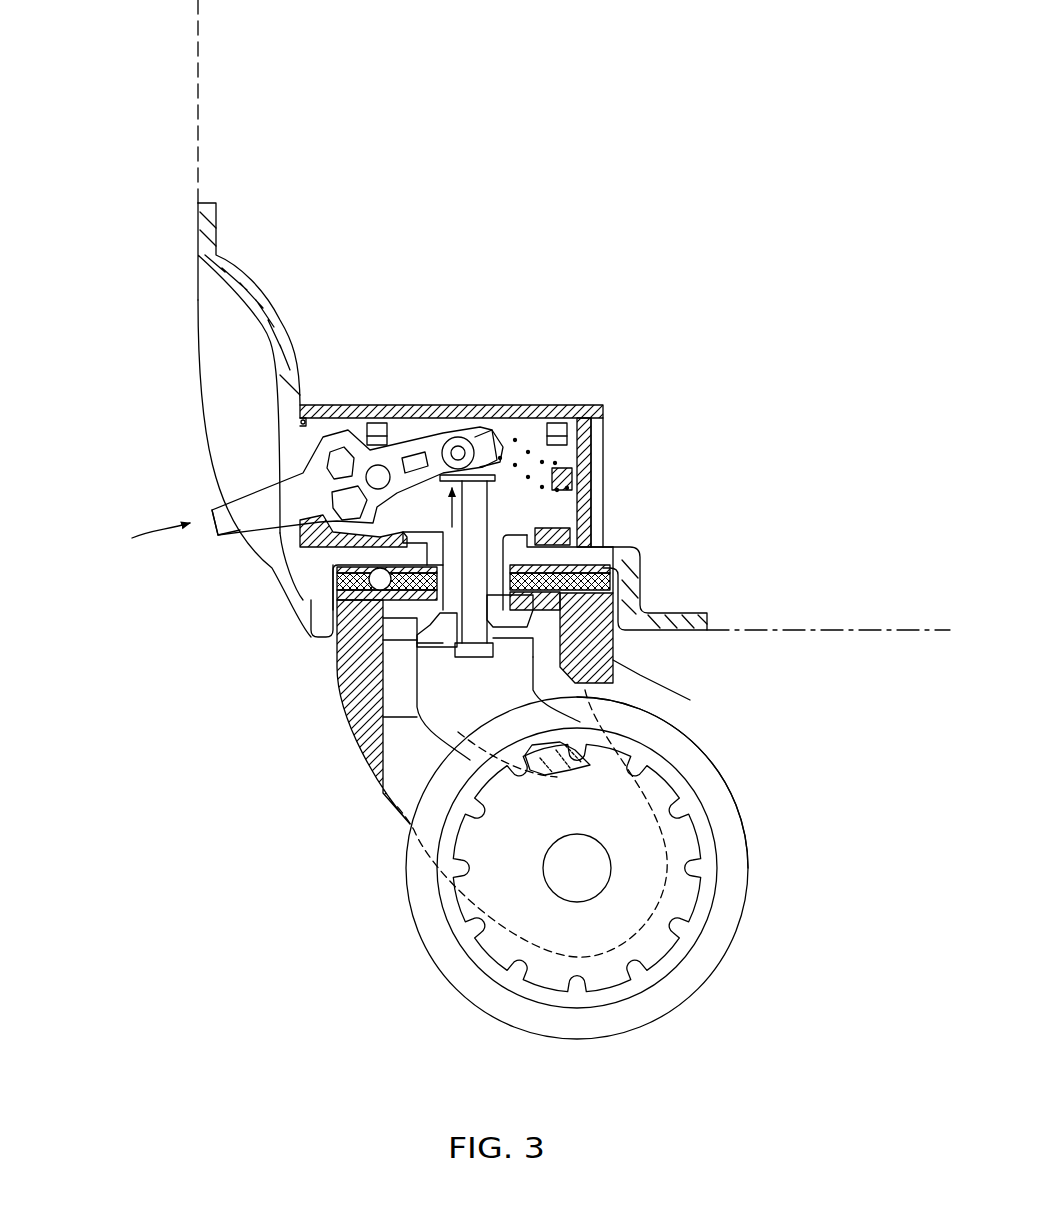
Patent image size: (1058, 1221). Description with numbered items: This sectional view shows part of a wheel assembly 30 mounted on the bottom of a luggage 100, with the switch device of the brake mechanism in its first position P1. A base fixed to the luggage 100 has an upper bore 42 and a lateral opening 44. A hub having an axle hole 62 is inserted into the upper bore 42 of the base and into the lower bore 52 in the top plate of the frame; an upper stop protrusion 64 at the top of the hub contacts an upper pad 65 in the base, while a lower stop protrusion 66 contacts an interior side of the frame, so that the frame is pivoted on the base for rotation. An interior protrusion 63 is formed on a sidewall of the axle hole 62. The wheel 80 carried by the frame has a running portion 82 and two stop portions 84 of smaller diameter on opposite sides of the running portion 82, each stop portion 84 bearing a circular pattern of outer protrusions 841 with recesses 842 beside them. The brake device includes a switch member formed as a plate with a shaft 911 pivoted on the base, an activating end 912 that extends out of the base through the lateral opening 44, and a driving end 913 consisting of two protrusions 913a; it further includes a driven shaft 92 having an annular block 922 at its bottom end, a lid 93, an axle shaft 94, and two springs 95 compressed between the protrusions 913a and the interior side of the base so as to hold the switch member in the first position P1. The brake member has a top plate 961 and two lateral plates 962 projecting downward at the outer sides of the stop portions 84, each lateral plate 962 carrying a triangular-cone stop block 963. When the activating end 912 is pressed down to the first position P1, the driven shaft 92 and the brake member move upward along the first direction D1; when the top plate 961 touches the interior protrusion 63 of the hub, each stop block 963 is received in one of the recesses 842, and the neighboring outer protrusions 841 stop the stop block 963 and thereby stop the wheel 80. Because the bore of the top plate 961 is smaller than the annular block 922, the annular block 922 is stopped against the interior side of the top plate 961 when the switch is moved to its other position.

The luggage 100 is at (196, 142).
The wheel assembly 30 is at (298, 225).
The lateral opening 44 is at (290, 448).
The shaft 911 is at (366, 444).
The activating end 912 is at (213, 510).
The driving end 913 is at (482, 440).
The protrusions 913a is at (440, 448).
The lid 93 is at (470, 430).
The axle shaft 94 is at (455, 437).
The springs 95 is at (545, 460).
The driven shaft 92 is at (480, 508).
The upper stop protrusion 64 is at (575, 512).
The upper pad 65 is at (603, 515).
The upper bore 42 is at (332, 562).
The interior protrusion 63 is at (330, 595).
The lower bore 52 is at (345, 598).
The top plate 961 is at (340, 645).
The lateral plates 962 is at (400, 716).
The stop block 963 is at (528, 762).
The lower stop protrusion 66 is at (613, 633).
The annular block 922 is at (613, 670).
The axle hole 62 is at (642, 553).
The wheel 80 is at (722, 992).
The running portion 82 is at (730, 880).
The stop portions 84 is at (871, 722).
The outer protrusions 841 is at (640, 745).
The recesses 842 is at (678, 773).
The first position P1 is at (141, 542).
The first direction D1 is at (430, 507).